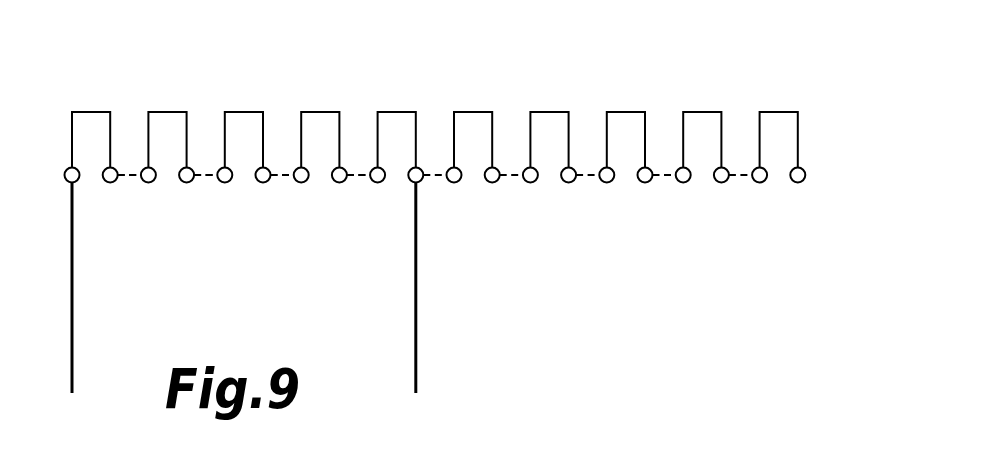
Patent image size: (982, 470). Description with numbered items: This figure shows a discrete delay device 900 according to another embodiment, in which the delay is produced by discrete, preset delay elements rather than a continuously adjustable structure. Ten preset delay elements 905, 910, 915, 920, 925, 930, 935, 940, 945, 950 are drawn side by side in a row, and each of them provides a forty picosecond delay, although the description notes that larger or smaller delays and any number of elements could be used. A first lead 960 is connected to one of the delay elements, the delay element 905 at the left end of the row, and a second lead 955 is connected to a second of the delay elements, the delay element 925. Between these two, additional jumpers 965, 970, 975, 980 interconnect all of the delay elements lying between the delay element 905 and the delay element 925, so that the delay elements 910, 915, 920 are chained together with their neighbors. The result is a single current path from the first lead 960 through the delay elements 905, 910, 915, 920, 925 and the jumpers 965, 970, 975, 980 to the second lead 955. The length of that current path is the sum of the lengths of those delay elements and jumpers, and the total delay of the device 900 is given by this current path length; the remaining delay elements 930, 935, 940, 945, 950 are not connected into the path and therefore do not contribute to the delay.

The discrete delay device 900 is at (587, 307).
The preset delay element 905 is at (83, 65).
The preset delay element 910 is at (160, 65).
The preset delay element 915 is at (236, 65).
The preset delay element 920 is at (312, 65).
The preset delay element 925 is at (389, 65).
The preset delay element 930 is at (465, 65).
The preset delay element 935 is at (542, 65).
The preset delay element 940 is at (618, 65).
The preset delay element 945 is at (694, 65).
The preset delay element 950 is at (771, 65).
The second lead 955 is at (417, 327).
The first lead 960 is at (74, 327).
The jumper 965 is at (127, 181).
The jumper 970 is at (204, 181).
The jumper 975 is at (280, 181).
The jumper 980 is at (357, 181).